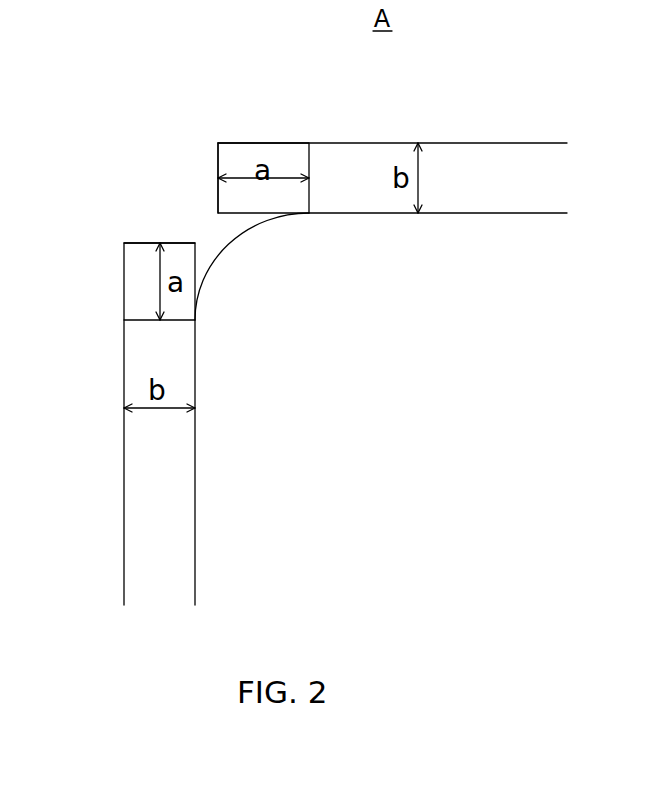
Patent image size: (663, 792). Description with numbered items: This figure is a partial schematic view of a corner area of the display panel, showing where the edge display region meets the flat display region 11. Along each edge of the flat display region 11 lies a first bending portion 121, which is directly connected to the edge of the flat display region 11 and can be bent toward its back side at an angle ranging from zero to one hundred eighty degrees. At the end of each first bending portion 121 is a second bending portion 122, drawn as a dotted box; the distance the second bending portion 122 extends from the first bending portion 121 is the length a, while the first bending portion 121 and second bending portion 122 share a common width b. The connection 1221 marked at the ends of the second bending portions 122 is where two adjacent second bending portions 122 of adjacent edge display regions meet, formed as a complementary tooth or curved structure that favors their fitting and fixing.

The flat display region 11 is at (233, 258).
The first bending portion 121 is at (346, 150).
The second bending portion 122 is at (258, 149).
The connection 1221 is at (214, 160).